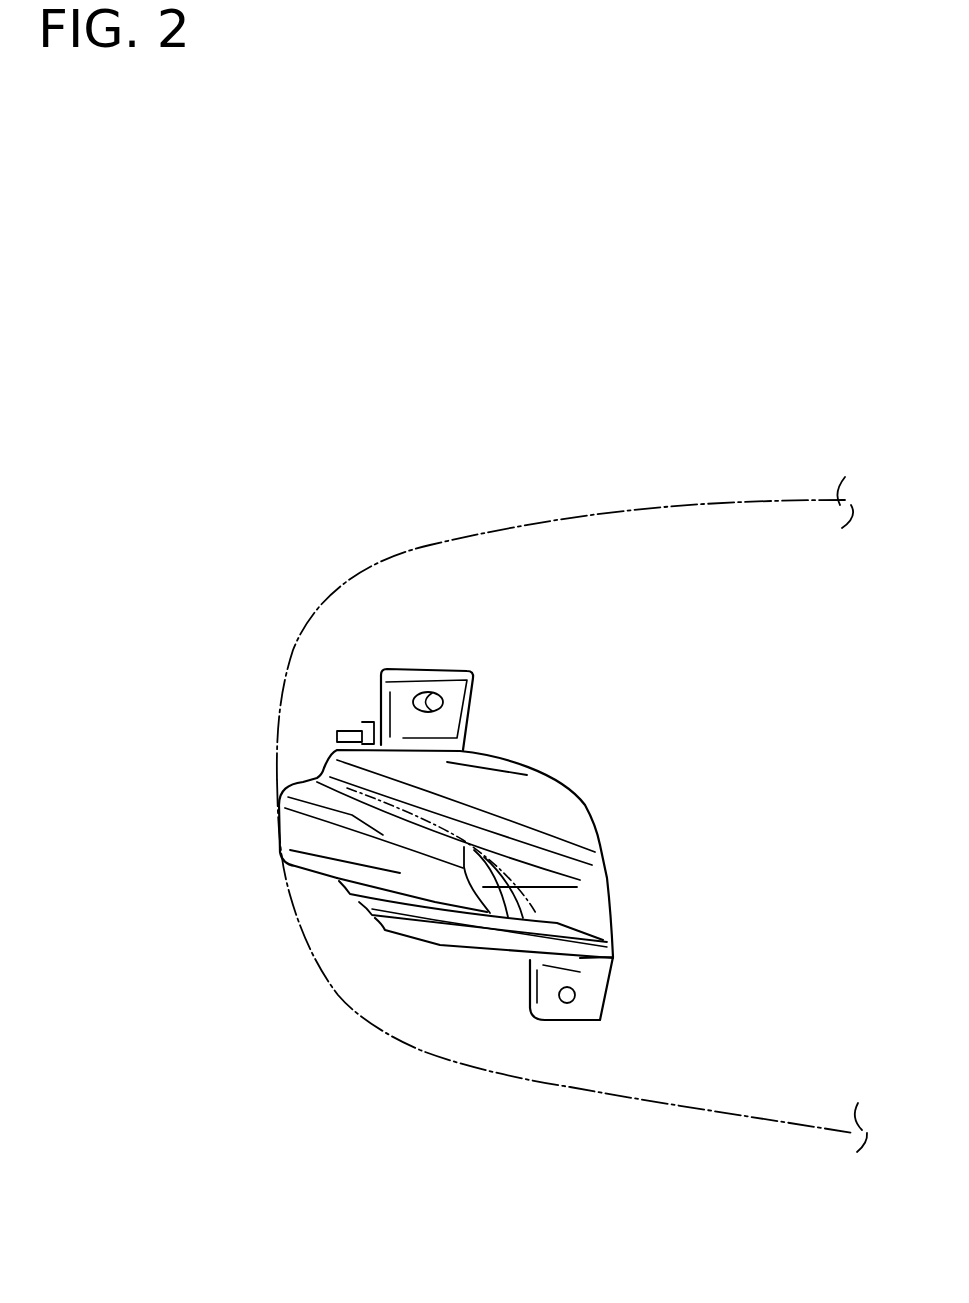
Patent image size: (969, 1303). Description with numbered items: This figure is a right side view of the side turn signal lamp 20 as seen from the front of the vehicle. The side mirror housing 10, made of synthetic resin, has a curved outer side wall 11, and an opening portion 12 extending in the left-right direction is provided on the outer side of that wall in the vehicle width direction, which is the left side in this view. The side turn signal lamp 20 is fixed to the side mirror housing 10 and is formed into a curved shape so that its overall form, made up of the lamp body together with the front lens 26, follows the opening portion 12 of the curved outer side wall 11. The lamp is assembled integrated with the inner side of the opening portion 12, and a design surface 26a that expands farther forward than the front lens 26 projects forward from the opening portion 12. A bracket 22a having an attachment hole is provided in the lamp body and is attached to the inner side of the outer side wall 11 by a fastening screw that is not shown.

The side mirror housing 10 is at (572, 737).
The curved outer side wall 11 is at (425, 548).
The opening portion 12 is at (580, 888).
The side turn signal lamp 20 is at (430, 809).
The bracket 22a is at (427, 692).
The front lens 26 is at (334, 874).
The design surface 26a is at (313, 843).